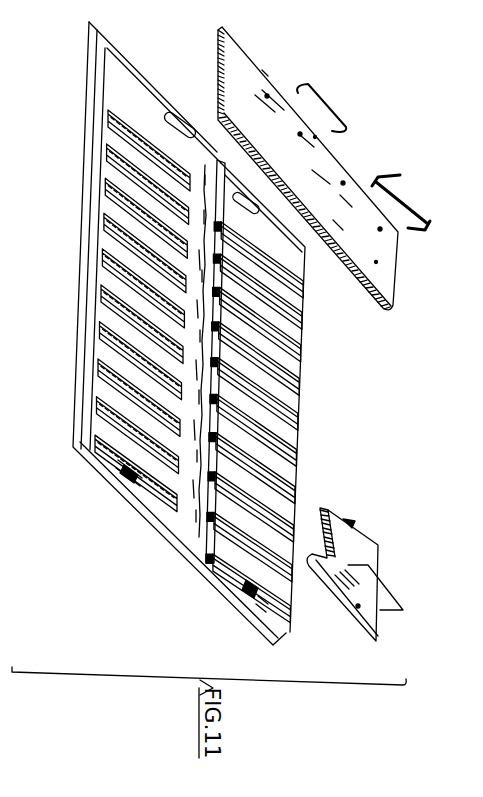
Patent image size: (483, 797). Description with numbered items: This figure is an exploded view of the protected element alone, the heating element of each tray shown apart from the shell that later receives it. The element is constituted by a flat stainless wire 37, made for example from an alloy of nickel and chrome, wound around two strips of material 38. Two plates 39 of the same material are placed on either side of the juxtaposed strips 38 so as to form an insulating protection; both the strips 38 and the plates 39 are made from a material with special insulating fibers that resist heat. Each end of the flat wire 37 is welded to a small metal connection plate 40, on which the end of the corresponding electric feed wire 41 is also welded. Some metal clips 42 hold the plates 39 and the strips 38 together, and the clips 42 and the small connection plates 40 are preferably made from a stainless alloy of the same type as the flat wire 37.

The flat stainless wire 37 is at (300, 387).
The strips of material 38 is at (298, 354).
The plates 39 is at (102, 72).
The small metal connection plate 40 is at (243, 596).
The electric feed wire 41 is at (140, 488).
The metal clips 42 is at (350, 128).